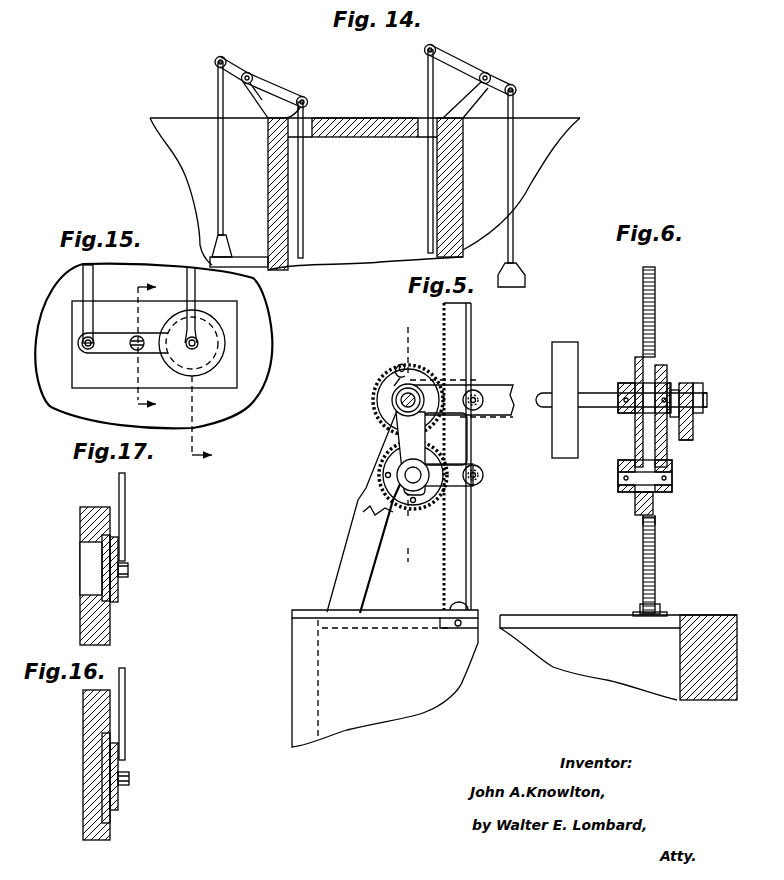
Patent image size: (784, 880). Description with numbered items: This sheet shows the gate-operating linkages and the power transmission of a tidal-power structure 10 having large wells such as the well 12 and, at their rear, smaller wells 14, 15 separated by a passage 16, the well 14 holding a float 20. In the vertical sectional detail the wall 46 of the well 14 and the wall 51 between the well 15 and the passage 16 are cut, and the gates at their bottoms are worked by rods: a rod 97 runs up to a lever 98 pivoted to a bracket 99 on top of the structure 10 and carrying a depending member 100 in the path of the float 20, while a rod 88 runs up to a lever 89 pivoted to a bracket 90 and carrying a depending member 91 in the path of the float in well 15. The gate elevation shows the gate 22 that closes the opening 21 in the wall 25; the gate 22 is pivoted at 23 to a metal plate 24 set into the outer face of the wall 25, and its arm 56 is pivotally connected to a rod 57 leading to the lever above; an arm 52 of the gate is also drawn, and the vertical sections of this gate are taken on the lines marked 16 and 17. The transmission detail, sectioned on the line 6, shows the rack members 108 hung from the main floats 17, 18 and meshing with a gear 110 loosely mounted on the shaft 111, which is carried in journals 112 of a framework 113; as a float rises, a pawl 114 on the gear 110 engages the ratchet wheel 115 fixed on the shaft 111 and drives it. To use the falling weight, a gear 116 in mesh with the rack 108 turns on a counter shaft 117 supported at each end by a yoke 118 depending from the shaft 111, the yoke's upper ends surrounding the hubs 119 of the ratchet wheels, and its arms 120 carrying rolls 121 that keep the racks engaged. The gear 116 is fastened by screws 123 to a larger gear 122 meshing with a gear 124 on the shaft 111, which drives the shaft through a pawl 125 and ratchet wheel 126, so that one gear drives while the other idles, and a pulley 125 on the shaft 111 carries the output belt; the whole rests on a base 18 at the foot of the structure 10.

In FIG. 5, the structure 10 is at (288, 646).
In FIG. 6, the structure 10 is at (703, 617).
In FIG. 6, the large well 12 is at (580, 620).
In FIG. 14, the smaller well 14 is at (185, 163).
In FIG. 14, the smaller well 15 is at (562, 141).
In FIG. 14, the passage 16 is at (352, 130).
In FIG. 15, the passage 16 is at (139, 343).
In FIG. 15, the float 17 is at (197, 363).
In FIG. 6, the main float 18 is at (566, 655).
In FIG. 14, the float 20 is at (246, 250).
In FIG. 15, the opening 21 is at (207, 372).
In FIG. 17, the opening 21 is at (88, 572).
In FIG. 15, the gate 22 is at (187, 376).
In FIG. 17, the gate 22 is at (118, 590).
In FIG. 16, the gate 22 is at (114, 753).
In FIG. 15, the pivot 23 is at (135, 352).
In FIG. 16, the pivot 23 is at (121, 780).
In FIG. 15, the metal plate 24 is at (72, 380).
In FIG. 17, the metal plate 24 is at (97, 535).
In FIG. 16, the metal plate 24 is at (102, 762).
In FIG. 15, the wall 25 is at (258, 333).
In FIG. 17, the wall 25 is at (103, 637).
In FIG. 16, the wall 25 is at (92, 719).
In FIG. 14, the wall 46 is at (268, 186).
In FIG. 14, the wall 51 is at (461, 186).
In FIG. 15, the arm 52 is at (183, 270).
In FIG. 17, the arm 52 is at (127, 505).
In FIG. 16, the arm 52 is at (127, 693).
In FIG. 15, the arm 56 is at (103, 341).
In FIG. 15, the rod 57 is at (83, 278).
In FIG. 5, the section line 6 is at (407, 445).
In FIG. 14, the rod 88 is at (427, 183).
In FIG. 14, the lever 89 is at (462, 66).
In FIG. 14, the bracket 90 is at (471, 91).
In FIG. 14, the depending member 91 is at (514, 110).
In FIG. 14, the rod 97 is at (304, 186).
In FIG. 14, the lever 98 is at (293, 95).
In FIG. 14, the bracket 99 is at (258, 88).
In FIG. 14, the depending member 100 is at (218, 96).
In FIG. 5, the rack member 108 is at (465, 323).
In FIG. 6, the rack member 108 is at (656, 300).
In FIG. 6, the gear 110 is at (656, 384).
In FIG. 5, the shaft 111 is at (393, 398).
In FIG. 6, the shaft 111 is at (600, 402).
In FIG. 6, the journal 112 is at (701, 383).
In FIG. 5, the framework 113 is at (343, 550).
In FIG. 6, the framework 113 is at (695, 428).
In FIG. 5, the pawl 114 is at (378, 410).
In FIG. 6, the pawl 114 is at (662, 393).
In FIG. 5, the ratchet wheel 115 is at (493, 413).
In FIG. 6, the ratchet wheel 115 is at (661, 410).
In FIG. 6, the gear 116 is at (654, 492).
In FIG. 5, the counter shaft 117 is at (405, 478).
In FIG. 6, the counter shaft 117 is at (673, 478).
In FIG. 5, the yoke 118 is at (413, 457).
In FIG. 6, the yoke 118 is at (635, 441).
In FIG. 6, the hub 119 is at (673, 395).
In FIG. 5, the arm 120 is at (457, 393).
In FIG. 5, the roll 121 is at (487, 392).
In FIG. 6, the larger gear 122 is at (635, 510).
In FIG. 5, the screw 123 is at (411, 494).
In FIG. 6, the screw 123 is at (635, 494).
In FIG. 5, the gear 124 is at (380, 430).
In FIG. 6, the gear 124 is at (635, 372).
In FIG. 5, the pawl 125 is at (412, 366).
In FIG. 6, the pawl 125 is at (559, 352).
In FIG. 5, the ratchet wheel 126 is at (393, 385).
In FIG. 6, the ratchet wheel 126 is at (632, 378).